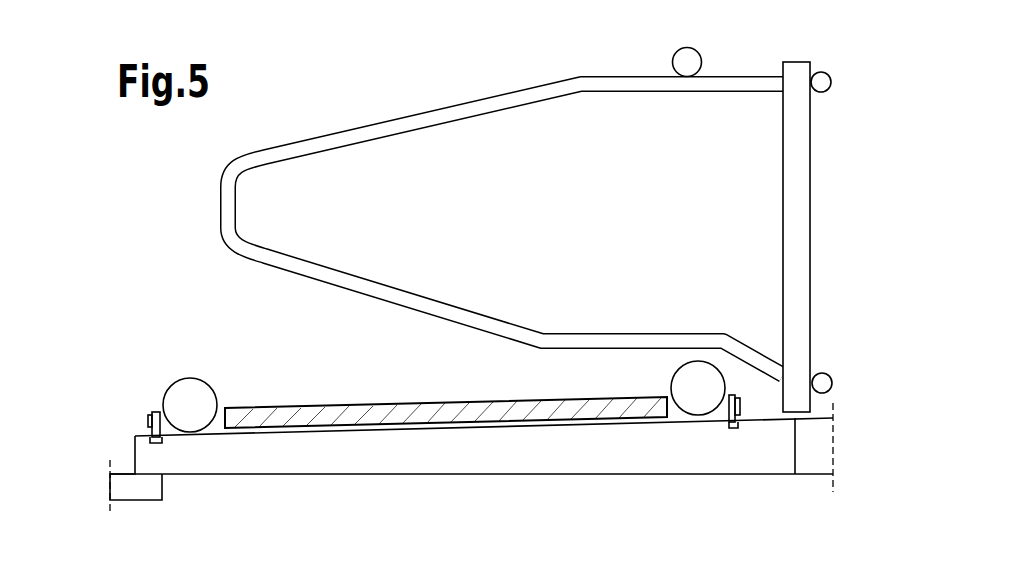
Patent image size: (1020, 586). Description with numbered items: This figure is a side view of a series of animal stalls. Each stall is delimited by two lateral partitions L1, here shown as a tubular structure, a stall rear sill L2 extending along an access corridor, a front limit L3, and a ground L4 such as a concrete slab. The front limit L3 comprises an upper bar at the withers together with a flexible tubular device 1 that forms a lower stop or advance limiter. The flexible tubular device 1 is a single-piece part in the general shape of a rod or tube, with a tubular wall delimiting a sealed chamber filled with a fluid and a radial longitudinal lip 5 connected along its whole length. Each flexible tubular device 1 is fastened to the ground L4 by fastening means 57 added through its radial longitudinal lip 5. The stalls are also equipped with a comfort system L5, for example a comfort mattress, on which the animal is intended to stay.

The flexible tubular device 1 is at (189, 370).
The radial longitudinal lip 5 is at (148, 427).
The fastening means 57 is at (158, 412).
The lateral partitions L1 is at (546, 71).
The stall rear sill L2 is at (99, 450).
The front limit L3 is at (862, 408).
The ground L4 is at (433, 446).
The comfort system L5 is at (347, 413).